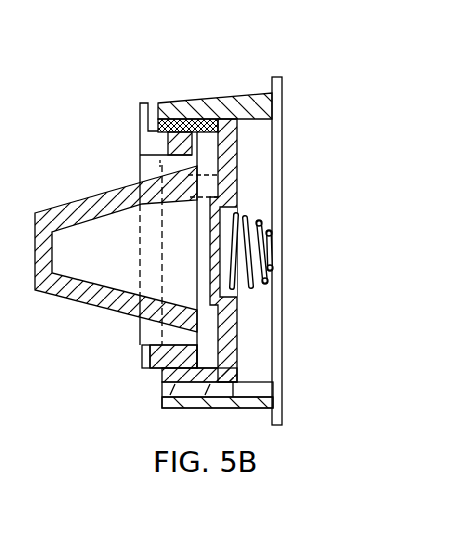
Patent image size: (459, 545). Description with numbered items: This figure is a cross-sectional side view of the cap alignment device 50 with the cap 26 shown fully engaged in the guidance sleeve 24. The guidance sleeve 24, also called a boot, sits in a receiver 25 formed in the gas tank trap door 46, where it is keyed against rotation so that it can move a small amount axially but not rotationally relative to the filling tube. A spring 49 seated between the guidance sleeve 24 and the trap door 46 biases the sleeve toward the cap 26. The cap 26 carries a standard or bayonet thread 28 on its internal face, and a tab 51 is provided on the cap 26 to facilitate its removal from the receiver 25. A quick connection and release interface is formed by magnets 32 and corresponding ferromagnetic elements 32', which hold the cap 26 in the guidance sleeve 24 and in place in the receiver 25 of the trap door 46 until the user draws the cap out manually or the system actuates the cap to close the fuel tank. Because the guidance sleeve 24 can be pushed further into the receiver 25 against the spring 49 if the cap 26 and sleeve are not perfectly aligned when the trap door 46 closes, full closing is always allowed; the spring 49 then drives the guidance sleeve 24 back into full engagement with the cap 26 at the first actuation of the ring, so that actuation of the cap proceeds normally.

The guidance sleeve 24 is at (248, 347).
The receiver 25 is at (218, 97).
The cap 26 is at (107, 313).
The bayonet thread 28 is at (153, 333).
The magnet 32 is at (162, 76).
The ferromagnetic element 32' is at (116, 152).
The trap door 46 is at (283, 388).
The spring 49 is at (253, 215).
The alignment device 50 is at (303, 108).
The tab 51 is at (140, 103).